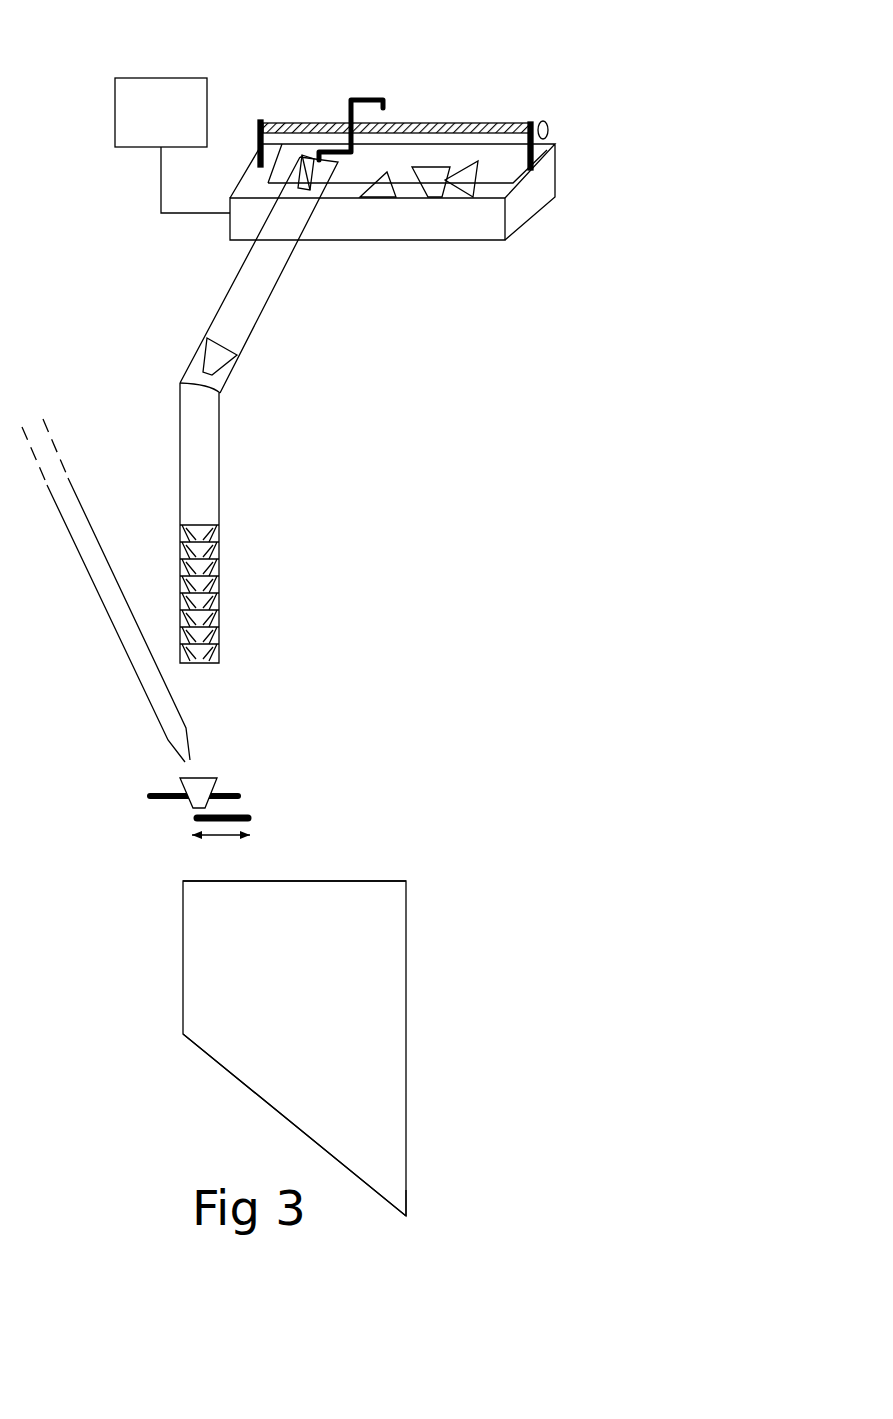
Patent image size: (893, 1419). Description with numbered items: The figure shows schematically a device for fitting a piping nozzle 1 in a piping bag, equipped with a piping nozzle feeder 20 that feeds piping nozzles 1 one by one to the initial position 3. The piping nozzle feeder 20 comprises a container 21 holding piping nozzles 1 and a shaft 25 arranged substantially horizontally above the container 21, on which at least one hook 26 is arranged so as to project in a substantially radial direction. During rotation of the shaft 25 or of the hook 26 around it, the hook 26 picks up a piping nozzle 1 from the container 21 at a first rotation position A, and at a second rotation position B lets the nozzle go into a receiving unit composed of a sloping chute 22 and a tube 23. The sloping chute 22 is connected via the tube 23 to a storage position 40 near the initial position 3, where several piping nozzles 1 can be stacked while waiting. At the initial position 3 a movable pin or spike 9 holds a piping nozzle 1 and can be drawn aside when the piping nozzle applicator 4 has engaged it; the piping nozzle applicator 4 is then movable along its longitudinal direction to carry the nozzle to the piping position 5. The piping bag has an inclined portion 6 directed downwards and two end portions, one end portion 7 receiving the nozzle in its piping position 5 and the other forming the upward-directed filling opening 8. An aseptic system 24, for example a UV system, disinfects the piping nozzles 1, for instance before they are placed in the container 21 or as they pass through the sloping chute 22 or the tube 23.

The piping nozzle 1 is at (470, 182).
The initial position 3 is at (249, 796).
The piping nozzle applicator 4 is at (106, 555).
The piping position 5 is at (420, 1218).
The inclined portion 6 is at (283, 1121).
The end portion 7 is at (383, 1205).
The filling opening 8 is at (354, 878).
The movable pin or spike 9 is at (200, 823).
The piping nozzle feeder 20 is at (420, 104).
The container 21 is at (452, 223).
The sloping chute 22 is at (263, 308).
The tube 23 is at (222, 440).
The aseptic system 24 is at (147, 126).
The shaft 25 is at (517, 120).
The hook 26 is at (377, 96).
The storage position 40 is at (237, 657).
The first rotation position A is at (376, 164).
The second rotation position B is at (311, 148).